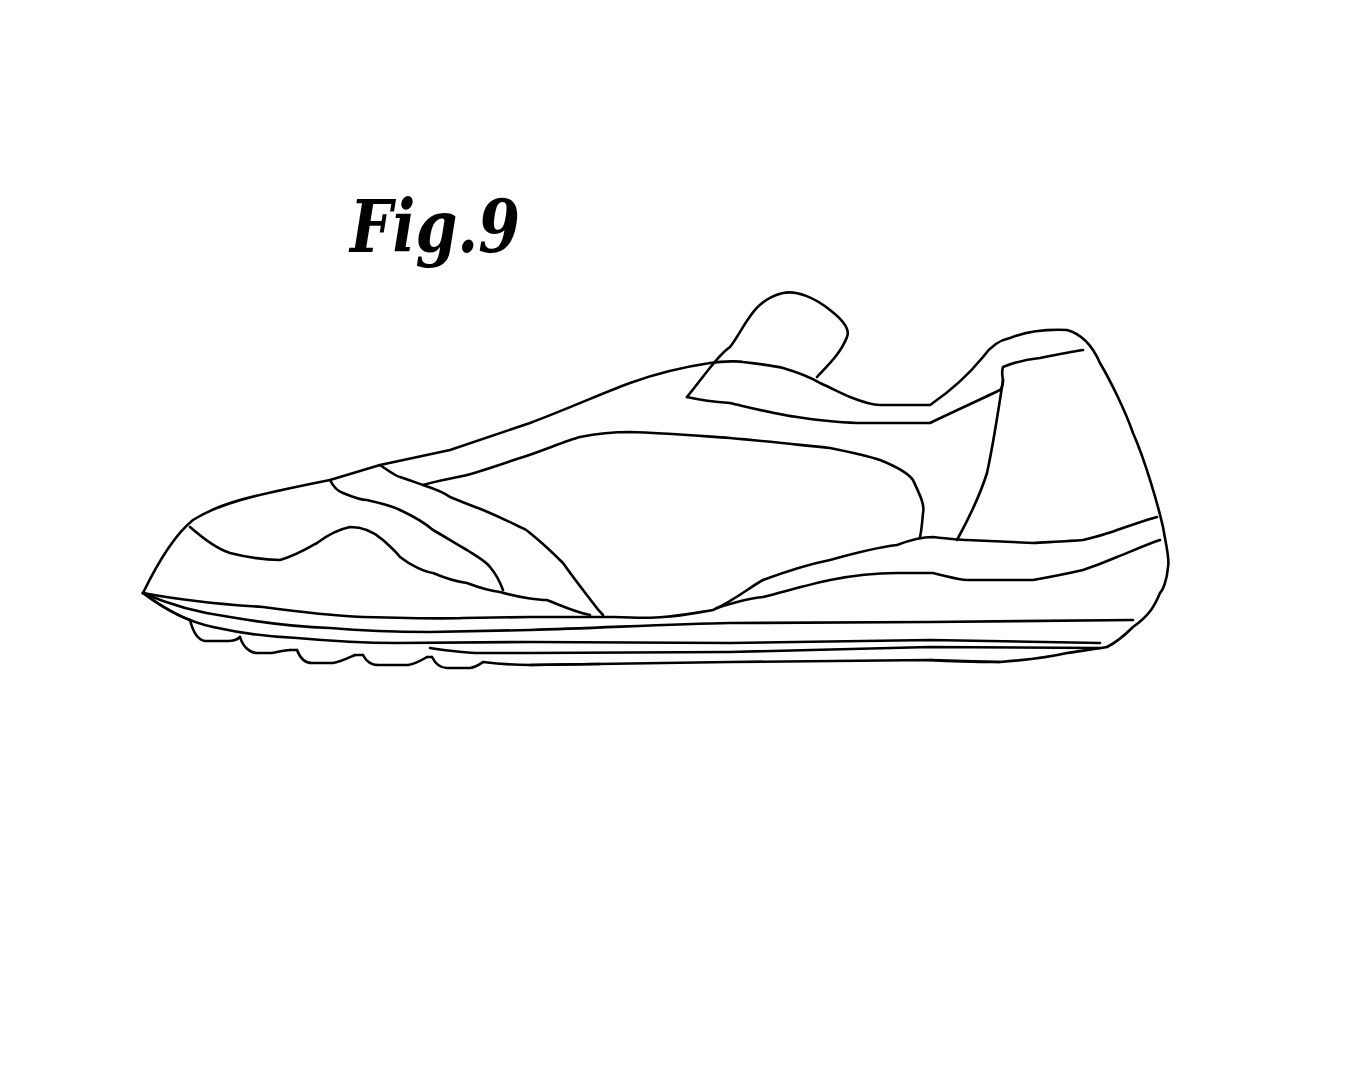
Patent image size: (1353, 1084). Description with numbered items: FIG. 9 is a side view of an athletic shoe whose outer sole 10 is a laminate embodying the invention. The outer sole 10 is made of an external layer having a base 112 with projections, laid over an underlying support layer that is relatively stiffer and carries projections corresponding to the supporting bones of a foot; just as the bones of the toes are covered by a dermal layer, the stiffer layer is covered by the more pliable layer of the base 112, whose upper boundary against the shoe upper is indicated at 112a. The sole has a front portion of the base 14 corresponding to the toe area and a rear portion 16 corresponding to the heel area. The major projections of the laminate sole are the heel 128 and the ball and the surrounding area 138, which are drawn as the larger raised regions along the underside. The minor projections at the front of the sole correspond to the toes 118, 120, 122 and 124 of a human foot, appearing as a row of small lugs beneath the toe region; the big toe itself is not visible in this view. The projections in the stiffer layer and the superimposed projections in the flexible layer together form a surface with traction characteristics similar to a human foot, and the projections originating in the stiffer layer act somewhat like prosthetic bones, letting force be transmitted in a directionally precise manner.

The outer sole 10 is at (1277, 665).
The front portion of the base 14 is at (172, 691).
The rear portion 16 is at (1039, 698).
The base 112 is at (1107, 647).
The outsole upper surface 112a is at (1122, 631).
The toe projection 118 is at (375, 665).
The toe projection 120 is at (317, 663).
The toe projection 122 is at (257, 653).
The toe projection 124 is at (213, 641).
The heel 128 is at (955, 662).
The ball and surrounding area 138 is at (562, 666).